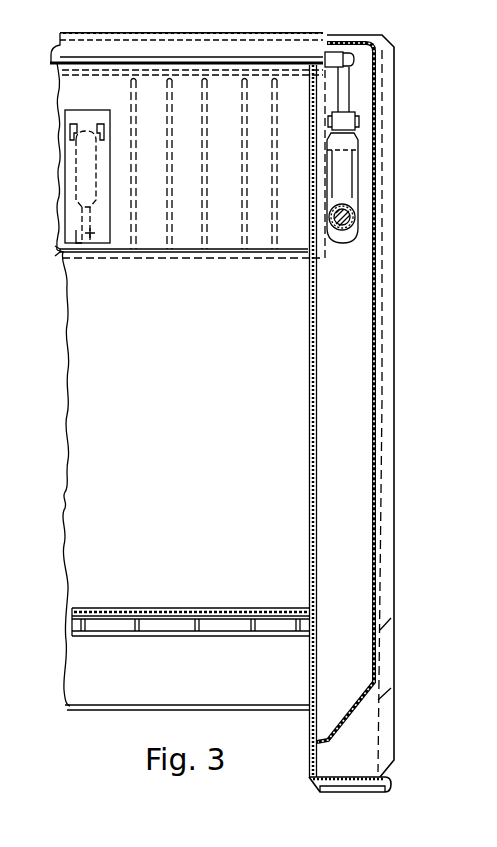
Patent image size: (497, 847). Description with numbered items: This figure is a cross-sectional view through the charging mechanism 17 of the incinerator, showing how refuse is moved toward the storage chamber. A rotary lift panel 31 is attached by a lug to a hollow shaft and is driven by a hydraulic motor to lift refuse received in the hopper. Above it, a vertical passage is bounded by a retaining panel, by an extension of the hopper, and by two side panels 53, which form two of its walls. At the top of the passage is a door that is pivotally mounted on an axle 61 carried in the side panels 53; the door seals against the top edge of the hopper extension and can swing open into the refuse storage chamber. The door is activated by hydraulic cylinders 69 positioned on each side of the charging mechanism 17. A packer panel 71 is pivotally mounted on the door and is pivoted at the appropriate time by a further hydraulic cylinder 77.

The charging mechanism 17 is at (395, 182).
The rotary lift panel 31 is at (168, 608).
The side panel 53 is at (312, 536).
The axle 61 is at (250, 55).
The hydraulic cylinder 69 is at (357, 191).
The packer panel 71 is at (233, 187).
The hydraulic cylinder 77 is at (93, 176).